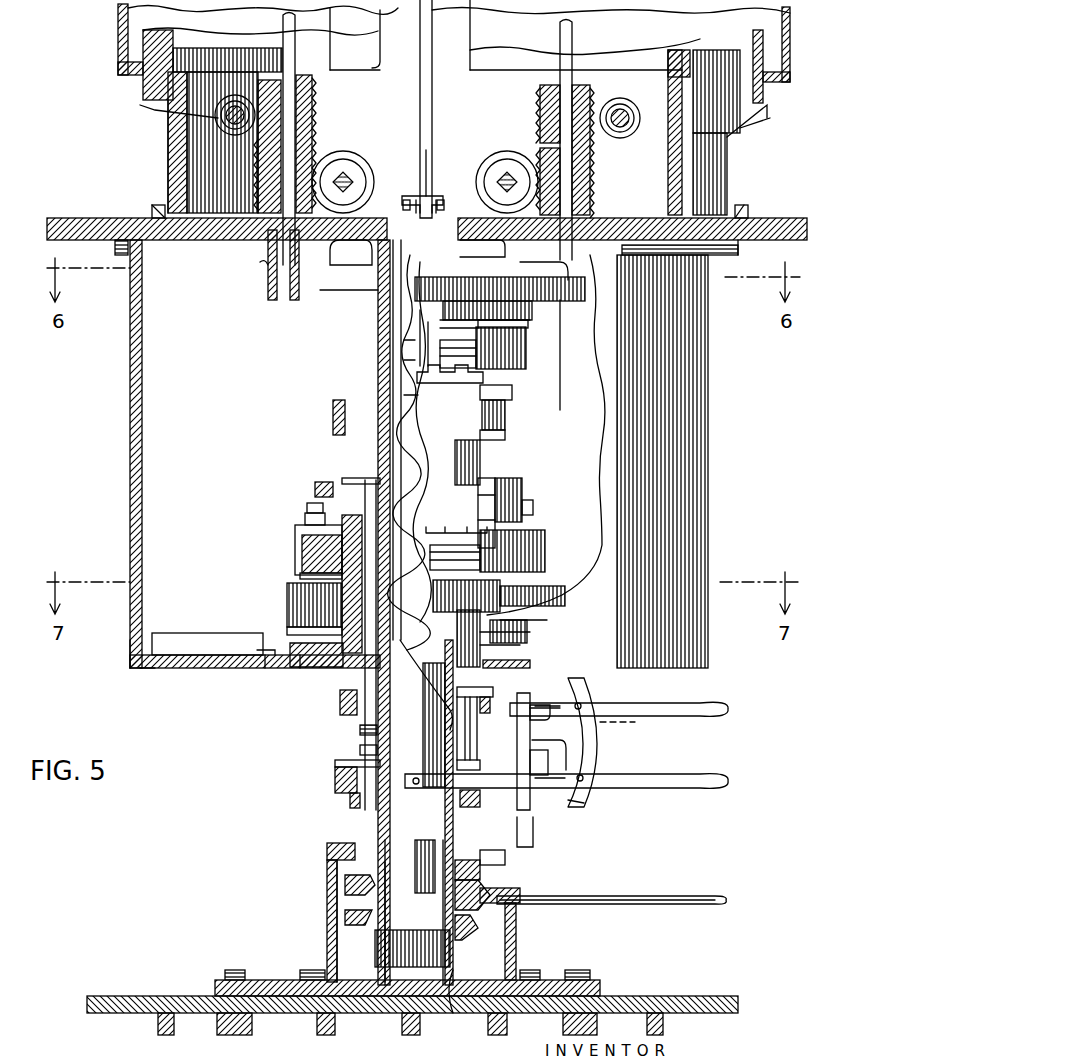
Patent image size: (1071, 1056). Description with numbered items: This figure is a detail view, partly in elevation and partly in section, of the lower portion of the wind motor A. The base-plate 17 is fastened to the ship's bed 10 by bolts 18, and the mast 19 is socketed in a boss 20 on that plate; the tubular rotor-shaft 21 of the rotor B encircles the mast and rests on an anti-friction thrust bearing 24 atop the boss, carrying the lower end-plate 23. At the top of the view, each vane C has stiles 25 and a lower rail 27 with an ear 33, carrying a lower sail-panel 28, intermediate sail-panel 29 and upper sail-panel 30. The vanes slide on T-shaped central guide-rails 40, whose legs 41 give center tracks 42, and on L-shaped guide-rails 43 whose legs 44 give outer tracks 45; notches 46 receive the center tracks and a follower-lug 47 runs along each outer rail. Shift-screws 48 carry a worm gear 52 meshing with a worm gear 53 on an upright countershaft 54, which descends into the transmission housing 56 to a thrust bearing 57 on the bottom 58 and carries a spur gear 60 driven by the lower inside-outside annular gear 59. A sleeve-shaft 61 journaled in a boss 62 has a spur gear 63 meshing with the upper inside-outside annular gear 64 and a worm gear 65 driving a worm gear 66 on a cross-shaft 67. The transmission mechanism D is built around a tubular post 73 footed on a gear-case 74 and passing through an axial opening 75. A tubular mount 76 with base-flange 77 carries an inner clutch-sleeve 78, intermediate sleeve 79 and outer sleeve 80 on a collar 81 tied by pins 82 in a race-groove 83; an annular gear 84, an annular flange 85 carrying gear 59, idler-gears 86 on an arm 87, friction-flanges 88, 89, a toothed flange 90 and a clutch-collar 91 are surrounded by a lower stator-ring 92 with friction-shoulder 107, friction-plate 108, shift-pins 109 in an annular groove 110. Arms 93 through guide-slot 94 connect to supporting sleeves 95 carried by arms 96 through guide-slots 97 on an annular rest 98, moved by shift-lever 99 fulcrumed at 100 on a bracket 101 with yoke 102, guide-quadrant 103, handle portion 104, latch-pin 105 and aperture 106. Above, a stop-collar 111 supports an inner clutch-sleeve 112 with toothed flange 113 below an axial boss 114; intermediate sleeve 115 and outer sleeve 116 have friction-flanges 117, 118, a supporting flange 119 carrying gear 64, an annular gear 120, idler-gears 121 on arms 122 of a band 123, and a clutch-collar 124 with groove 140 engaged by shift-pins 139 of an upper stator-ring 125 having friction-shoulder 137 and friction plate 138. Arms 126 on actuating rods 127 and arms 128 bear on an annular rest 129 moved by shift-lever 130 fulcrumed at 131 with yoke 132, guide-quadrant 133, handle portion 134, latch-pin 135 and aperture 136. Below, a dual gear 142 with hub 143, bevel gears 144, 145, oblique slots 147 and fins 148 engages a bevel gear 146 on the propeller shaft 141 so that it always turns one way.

The ship's bed 10 is at (145, 1013).
The base-plate 17 is at (600, 985).
The bolts 18 is at (225, 972).
The mast 19 is at (400, 860).
The boss 20 is at (452, 1013).
The rotor-shaft 21 is at (327, 848).
The lower end-plate 23 is at (115, 245).
The anti-friction thrust bearing 24 is at (385, 945).
The stiles 25 is at (415, 50).
The lower rail 27 is at (178, 148).
The lower sail-panel 28 is at (168, 90).
The intermediate sail-panel 29 is at (143, 78).
The upper sail-panel 30 is at (118, 33).
The ear 33 is at (782, 125).
The central guide-rails 40 is at (430, 180).
The legs 41 is at (436, 180).
The center tracks 42 is at (414, 195).
The guide-rails 43 is at (160, 210).
The legs 44 is at (150, 218).
The outer tracks 45 is at (158, 205).
The notches 46 is at (402, 200).
The follower-lug 47 is at (738, 244).
The shift-screws 48 is at (218, 118).
The worm gear 52 is at (240, 108).
The worm gear 53 is at (312, 105).
The upright countershaft 54 is at (296, 77).
The transmission housing 56 is at (130, 640).
The thrust bearing 57 is at (265, 660).
The bottom 58 is at (165, 668).
The lower inside-outside annular gear 59 is at (263, 640).
The spur gears 60 is at (257, 650).
The sleeve-shaft 61 is at (268, 248).
The boss 62 is at (262, 264).
The spur gear 63 is at (445, 292).
The upper inside-outside annular gear 64 is at (445, 312).
The worm gear 65 is at (320, 142).
The worm gear 66 is at (355, 170).
The cross-shaft 67 is at (346, 180).
The tubular post 73 is at (345, 805).
The gear-case 74 is at (516, 948).
The axial opening 75 is at (490, 668).
The tubular mount 76 is at (311, 477).
The base-flange 77 is at (615, 665).
The inner clutch-sleeve 78 is at (295, 530).
The intermediate sleeve 79 is at (300, 575).
The outer sleeve 80 is at (287, 600).
The collar 81 is at (300, 690).
The pins 82 is at (312, 680).
The annular race-groove 83 is at (340, 700).
The annular gear 84 is at (287, 600).
The annular flange 85 is at (342, 590).
The idler-gears 86 is at (300, 662).
The arm 87 is at (300, 672).
The friction-flange 88 is at (302, 548).
The friction-flange 89 is at (302, 538).
The annular flange 90 is at (305, 515).
The clutch-collar 91 is at (315, 480).
The lower stator-ring 92 is at (302, 528).
The arms 93 is at (340, 478).
The vertical guide-slot 94 is at (355, 466).
The upright supporting sleeve 95 is at (362, 700).
The arms 96 is at (365, 730).
The vertical guide-slots 97 is at (360, 752).
The annular rest 98 is at (348, 736).
The shift-lever 99 is at (515, 705).
The fulcrum 100 is at (551, 718).
The bracket 101 is at (535, 835).
The yoke 102 is at (500, 712).
The guide-quadrant 103 is at (585, 690).
The handle portion 104 is at (680, 716).
The latch-pin 105 is at (600, 702).
The aperture 106 is at (635, 721).
The friction-shoulder 107 is at (302, 538).
The friction-plate 108 is at (290, 565).
The shift-pins 109 is at (307, 505).
The annular groove 110 is at (533, 505).
The stop-collar 111 is at (410, 365).
The inner clutch-sleeve 112 is at (430, 348).
The annular flange 113 is at (520, 388).
The axial boss 114 is at (402, 208).
The intermediate sleeve 115 is at (425, 342).
The outer sleeve 116 is at (445, 338).
The friction-flange 117 is at (445, 355).
The friction-flange 118 is at (480, 340).
The supporting flange 119 is at (478, 324).
The annular gear 120 is at (440, 290).
The idler-gears 121 is at (330, 305).
The arms 122 is at (441, 260).
The band 123 is at (487, 252).
The clutch-collar 124 is at (480, 392).
The upper stator-ring 125 is at (333, 420).
The arms 126 is at (340, 438).
The actuating rods 127 is at (335, 777).
The arms 128 is at (335, 790).
The annular rest 129 is at (350, 800).
The shift-lever 130 is at (540, 800).
The fulcrum 131 is at (545, 762).
The yoke 132 is at (480, 806).
The guide-quadrant 133 is at (585, 760).
The handle portion 134 is at (678, 788).
The latch-pin 135 is at (592, 775).
The aperture 136 is at (588, 795).
The friction-shoulder 137 is at (410, 348).
The friction plate 138 is at (440, 330).
The shift-pins 139 is at (410, 392).
The annular groove 140 is at (505, 420).
The propeller shaft 141 is at (625, 895).
The dual gear 142 is at (350, 910).
The hub 143 is at (327, 898).
The bevel gear 144 is at (345, 882).
The bevel gear 145 is at (348, 930).
The bevel gear 146 is at (490, 912).
The slots 147 is at (463, 940).
The fins 148 is at (478, 870).
The motor A is at (216, 815).
The rotor B is at (112, 376).
The vanes C is at (116, 178).
The transmission mechanism D is at (165, 468).